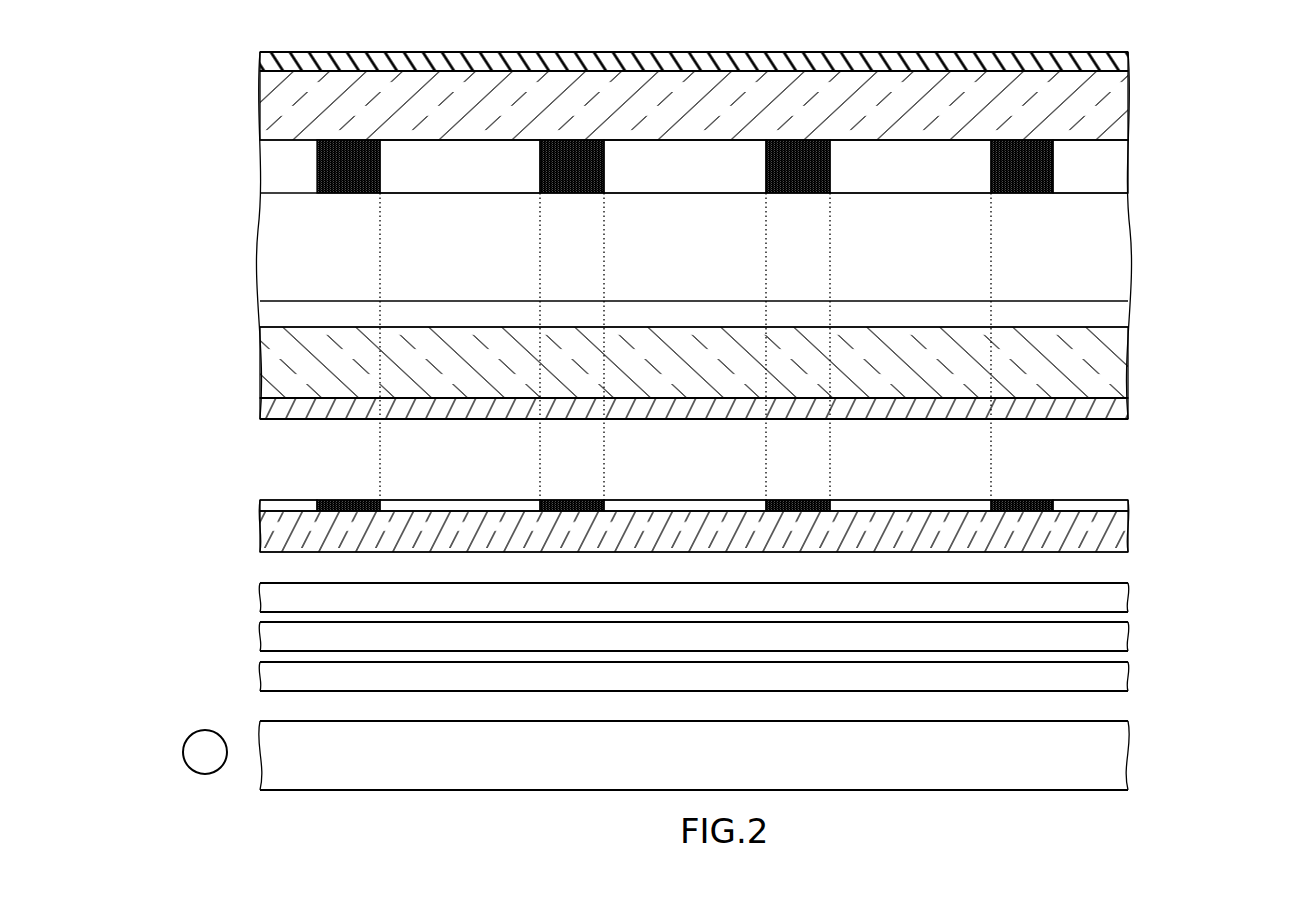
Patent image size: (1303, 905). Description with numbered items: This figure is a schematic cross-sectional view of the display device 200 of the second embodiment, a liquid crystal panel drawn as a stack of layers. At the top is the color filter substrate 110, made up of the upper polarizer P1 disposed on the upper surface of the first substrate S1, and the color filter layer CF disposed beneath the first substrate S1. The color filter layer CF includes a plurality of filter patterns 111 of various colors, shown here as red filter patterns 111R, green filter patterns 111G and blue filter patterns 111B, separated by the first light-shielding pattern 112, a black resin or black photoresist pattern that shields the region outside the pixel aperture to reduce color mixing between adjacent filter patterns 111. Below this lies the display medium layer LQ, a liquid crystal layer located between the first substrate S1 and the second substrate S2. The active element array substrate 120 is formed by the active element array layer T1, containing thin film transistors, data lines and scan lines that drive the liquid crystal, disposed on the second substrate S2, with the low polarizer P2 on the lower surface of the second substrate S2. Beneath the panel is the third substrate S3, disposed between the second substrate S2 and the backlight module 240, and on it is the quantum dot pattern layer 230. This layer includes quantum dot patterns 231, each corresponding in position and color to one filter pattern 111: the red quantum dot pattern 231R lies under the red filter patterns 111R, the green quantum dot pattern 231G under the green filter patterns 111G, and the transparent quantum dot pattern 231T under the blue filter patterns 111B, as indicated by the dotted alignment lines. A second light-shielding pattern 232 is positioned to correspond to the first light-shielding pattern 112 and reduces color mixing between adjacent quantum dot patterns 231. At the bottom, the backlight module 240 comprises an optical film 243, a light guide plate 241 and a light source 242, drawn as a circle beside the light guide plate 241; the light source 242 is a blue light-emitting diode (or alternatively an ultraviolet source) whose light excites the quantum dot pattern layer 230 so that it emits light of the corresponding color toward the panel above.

The display device 200 is at (222, 73).
The color filter substrate 110 is at (1210, 111).
The upper polarizer P1 is at (1128, 61).
The first substrate S1 is at (1128, 88).
The color filter layer CF is at (1136, 168).
The filter patterns 111 is at (977, 108).
The red filter patterns 111R is at (425, 154).
The green filter patterns 111G is at (696, 162).
The blue filter patterns 111B is at (954, 166).
The first light-shielding pattern 112 is at (1021, 150).
The display medium layer LQ is at (1124, 246).
The active element array substrate 120 is at (1208, 346).
The active element array layer T1 is at (1124, 314).
The second substrate S2 is at (1128, 360).
The low polarizer P2 is at (1128, 408).
The quantum dot pattern layer 230 is at (1144, 505).
The quantum dot pattern 231 is at (977, 462).
The transparent quantum dot pattern 231T is at (296, 500).
The red quantum dot pattern 231R is at (462, 500).
The green quantum dot pattern 231G is at (682, 500).
The second light-shielding pattern 232 is at (352, 511).
The third substrate S3 is at (1125, 534).
The backlight module 240 is at (1215, 712).
The optical film 243 is at (1134, 583).
The light guide plate 241 is at (1120, 755).
The light source 242 is at (203, 740).